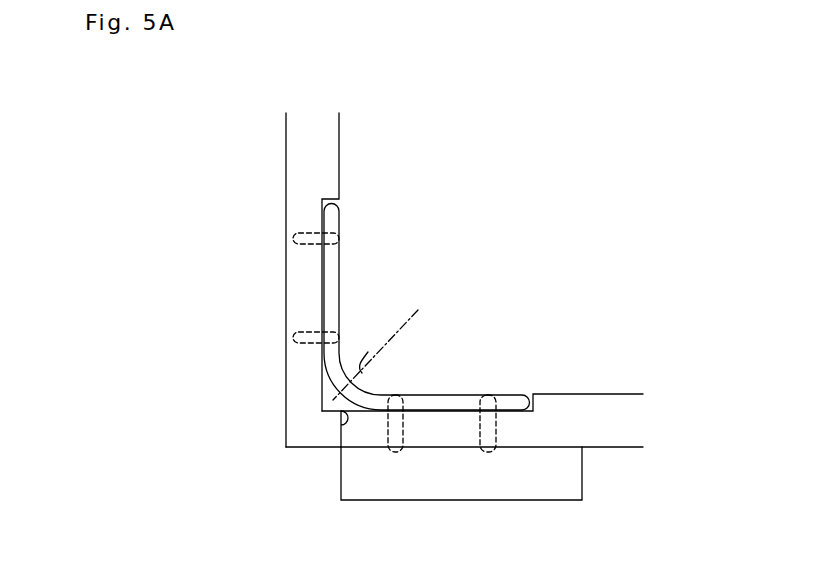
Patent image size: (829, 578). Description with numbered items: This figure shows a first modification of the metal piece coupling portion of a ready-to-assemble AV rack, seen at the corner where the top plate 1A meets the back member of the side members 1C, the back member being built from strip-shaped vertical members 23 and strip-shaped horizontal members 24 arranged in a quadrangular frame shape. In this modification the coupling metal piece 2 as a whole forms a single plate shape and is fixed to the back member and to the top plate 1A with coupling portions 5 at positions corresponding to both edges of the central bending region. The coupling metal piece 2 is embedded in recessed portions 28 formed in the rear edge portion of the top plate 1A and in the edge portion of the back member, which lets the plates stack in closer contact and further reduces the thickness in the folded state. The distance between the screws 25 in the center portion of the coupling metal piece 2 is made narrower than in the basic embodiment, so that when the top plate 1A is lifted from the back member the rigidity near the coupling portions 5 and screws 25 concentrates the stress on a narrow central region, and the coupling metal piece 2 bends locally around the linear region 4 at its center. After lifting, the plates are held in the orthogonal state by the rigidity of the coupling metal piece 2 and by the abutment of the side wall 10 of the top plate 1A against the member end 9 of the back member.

The top plate 1A is at (303, 137).
The side members 1C is at (503, 462).
The strip-shaped vertical members 23 is at (620, 437).
The strip-shaped horizontal members 24 is at (557, 491).
The member end 9 is at (336, 440).
The side wall 10 is at (346, 411).
The coupling metal piece 2 is at (371, 384).
The recessed portions 28 is at (326, 294).
The plastic deformation line 4 is at (380, 342).
The screws 25 is at (293, 235).
The coupling portions 5 is at (293, 337).